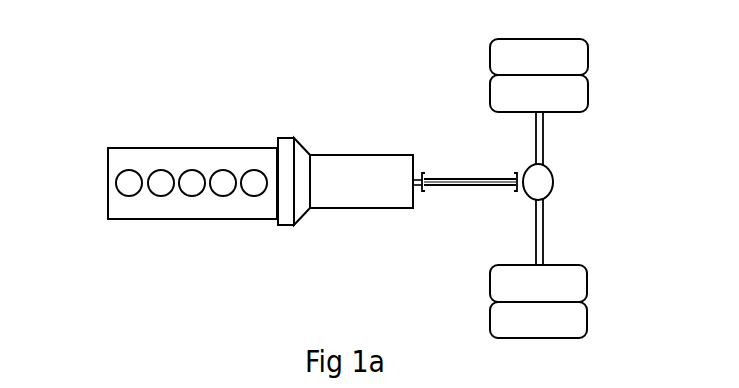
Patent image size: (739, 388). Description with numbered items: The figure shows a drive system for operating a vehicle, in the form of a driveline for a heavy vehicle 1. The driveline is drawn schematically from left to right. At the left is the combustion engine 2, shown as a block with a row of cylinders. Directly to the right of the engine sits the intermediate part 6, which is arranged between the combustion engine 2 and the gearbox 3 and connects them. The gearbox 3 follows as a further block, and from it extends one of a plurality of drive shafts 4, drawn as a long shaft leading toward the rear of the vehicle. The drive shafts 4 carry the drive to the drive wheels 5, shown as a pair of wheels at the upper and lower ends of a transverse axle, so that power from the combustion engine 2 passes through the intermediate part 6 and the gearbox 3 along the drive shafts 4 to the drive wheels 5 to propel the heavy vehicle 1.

The heavy vehicle 1 is at (230, 109).
The combustion engine 2 is at (178, 207).
The gearbox 3 is at (372, 190).
The drive shafts 4 is at (463, 180).
The drive wheels 5 is at (569, 92).
The intermediate part 6 is at (288, 175).